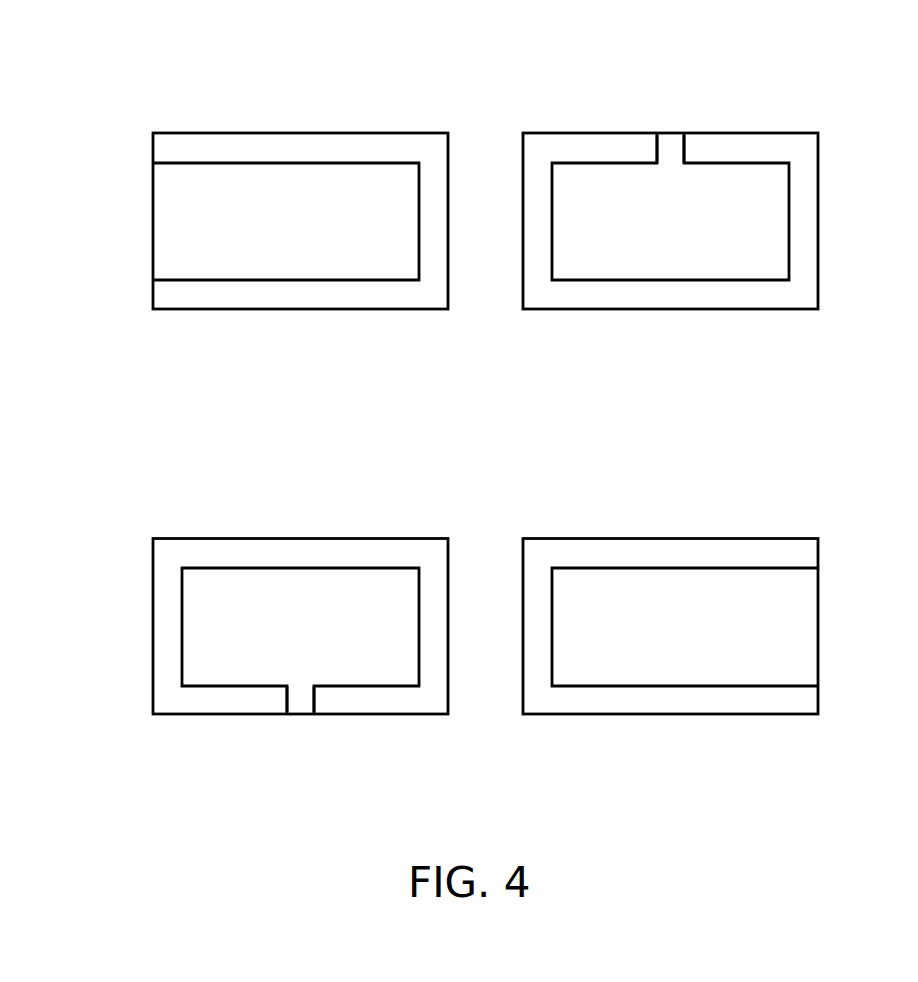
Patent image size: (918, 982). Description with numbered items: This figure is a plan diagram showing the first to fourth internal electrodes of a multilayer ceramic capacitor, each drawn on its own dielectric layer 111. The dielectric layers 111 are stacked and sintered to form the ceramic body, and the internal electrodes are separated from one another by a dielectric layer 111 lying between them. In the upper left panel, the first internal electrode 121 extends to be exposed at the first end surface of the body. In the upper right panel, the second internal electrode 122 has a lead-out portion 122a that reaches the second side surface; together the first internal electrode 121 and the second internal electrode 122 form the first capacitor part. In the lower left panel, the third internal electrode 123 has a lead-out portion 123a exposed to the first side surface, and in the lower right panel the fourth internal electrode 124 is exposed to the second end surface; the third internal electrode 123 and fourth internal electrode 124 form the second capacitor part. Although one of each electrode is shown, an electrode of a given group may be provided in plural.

The dielectric layer 111 is at (240, 295).
The first internal electrode 121 is at (180, 211).
The second internal electrode 122 is at (667, 247).
The lead-out portion 122a is at (669, 138).
The third internal electrode 123 is at (292, 592).
The lead-out portion 123a is at (303, 700).
The fourth internal electrode 124 is at (663, 588).